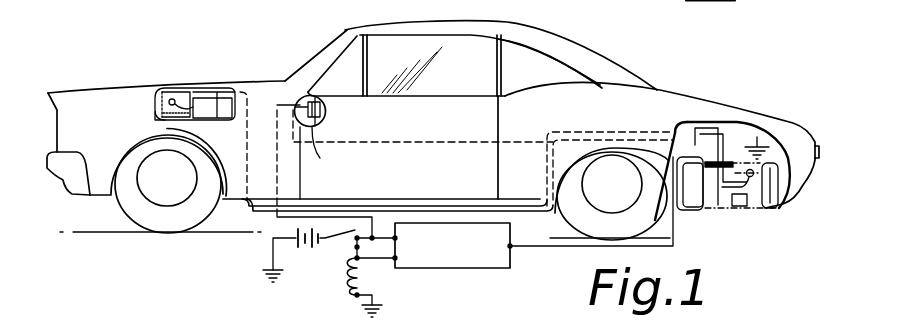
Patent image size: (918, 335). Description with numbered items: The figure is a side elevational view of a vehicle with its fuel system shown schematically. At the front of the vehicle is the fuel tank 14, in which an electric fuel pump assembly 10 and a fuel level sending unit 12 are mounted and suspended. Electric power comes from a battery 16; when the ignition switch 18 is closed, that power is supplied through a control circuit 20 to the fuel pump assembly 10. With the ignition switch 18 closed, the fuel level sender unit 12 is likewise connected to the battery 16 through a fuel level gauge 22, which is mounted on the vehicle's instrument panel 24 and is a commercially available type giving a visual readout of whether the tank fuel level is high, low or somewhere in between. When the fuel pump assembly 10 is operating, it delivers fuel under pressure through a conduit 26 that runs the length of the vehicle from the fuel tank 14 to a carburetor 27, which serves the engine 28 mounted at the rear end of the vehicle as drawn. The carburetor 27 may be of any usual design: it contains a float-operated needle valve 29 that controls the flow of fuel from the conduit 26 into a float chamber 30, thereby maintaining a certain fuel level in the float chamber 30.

The electric fuel pump assembly 10 is at (737, 207).
The fuel level sending unit 12 is at (775, 148).
The vehicle fuel tank 14 is at (764, 212).
The battery 16 is at (303, 250).
The ignition switch 18 is at (340, 242).
The control circuit 20 is at (458, 268).
The fuel level gauge 22 is at (326, 112).
The instrument panel 24 is at (320, 158).
The conduit 26 is at (219, 96).
The carburetor 27 is at (206, 108).
The front end mounted engine 28 is at (163, 119).
The float-operated needle valve 29 is at (172, 99).
The float chamber 30 is at (155, 102).